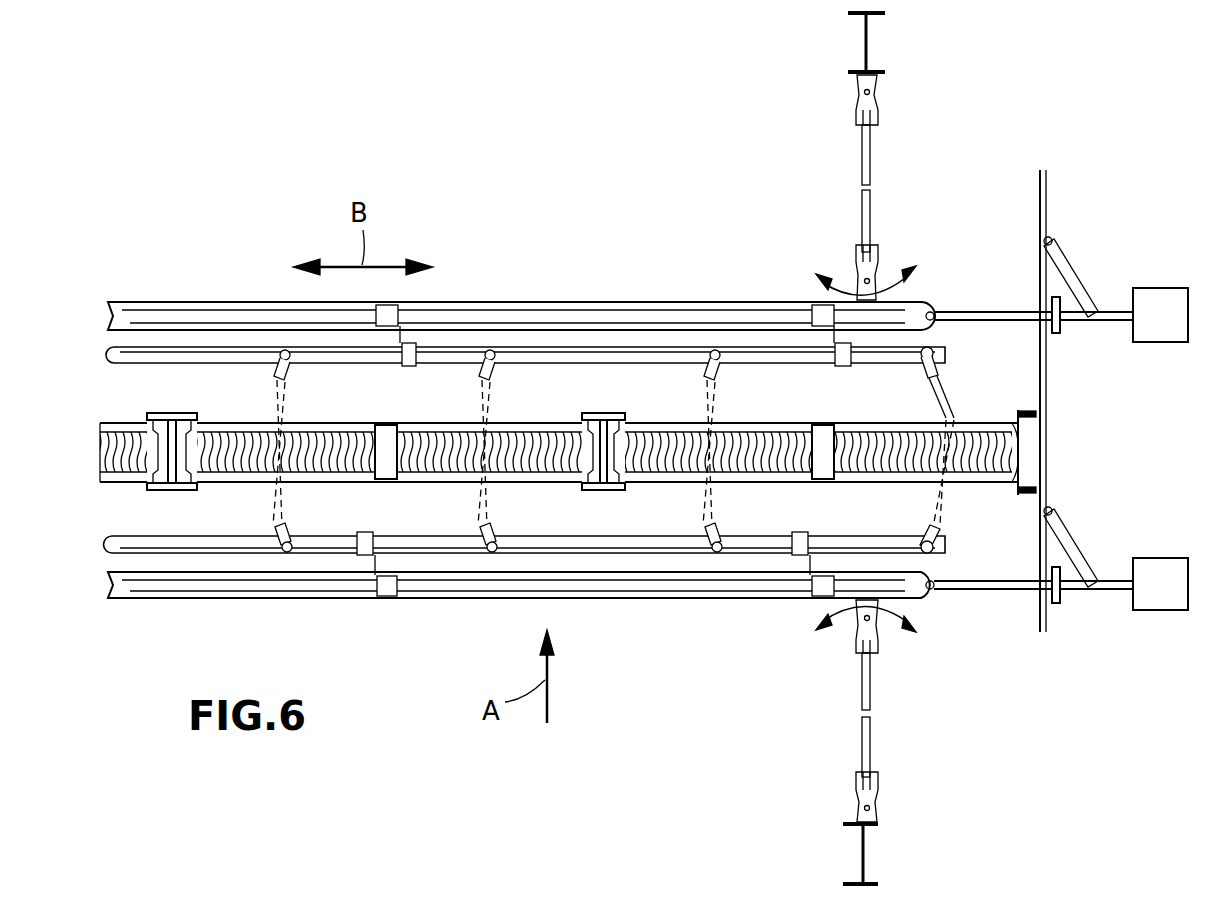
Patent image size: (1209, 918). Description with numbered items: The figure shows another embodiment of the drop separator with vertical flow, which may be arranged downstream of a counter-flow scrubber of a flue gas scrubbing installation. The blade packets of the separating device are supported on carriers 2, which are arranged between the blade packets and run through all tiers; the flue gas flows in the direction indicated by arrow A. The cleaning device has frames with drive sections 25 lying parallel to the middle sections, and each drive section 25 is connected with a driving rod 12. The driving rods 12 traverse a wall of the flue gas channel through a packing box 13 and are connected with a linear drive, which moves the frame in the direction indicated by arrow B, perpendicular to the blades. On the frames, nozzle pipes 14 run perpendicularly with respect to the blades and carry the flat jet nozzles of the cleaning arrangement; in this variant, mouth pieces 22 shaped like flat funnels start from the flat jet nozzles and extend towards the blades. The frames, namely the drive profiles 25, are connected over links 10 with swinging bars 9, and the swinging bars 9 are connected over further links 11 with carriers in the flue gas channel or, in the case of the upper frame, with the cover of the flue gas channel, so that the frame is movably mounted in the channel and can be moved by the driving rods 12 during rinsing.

The carrier 2 is at (607, 413).
The swinging bar 9 is at (870, 158).
The link 10 is at (858, 292).
The further link 11 is at (870, 92).
The driving rod 12 is at (983, 592).
The packing box 13 is at (1053, 604).
The nozzle pipe 14 is at (637, 543).
The mouth piece 22 is at (950, 405).
The drive section 25 is at (930, 303).